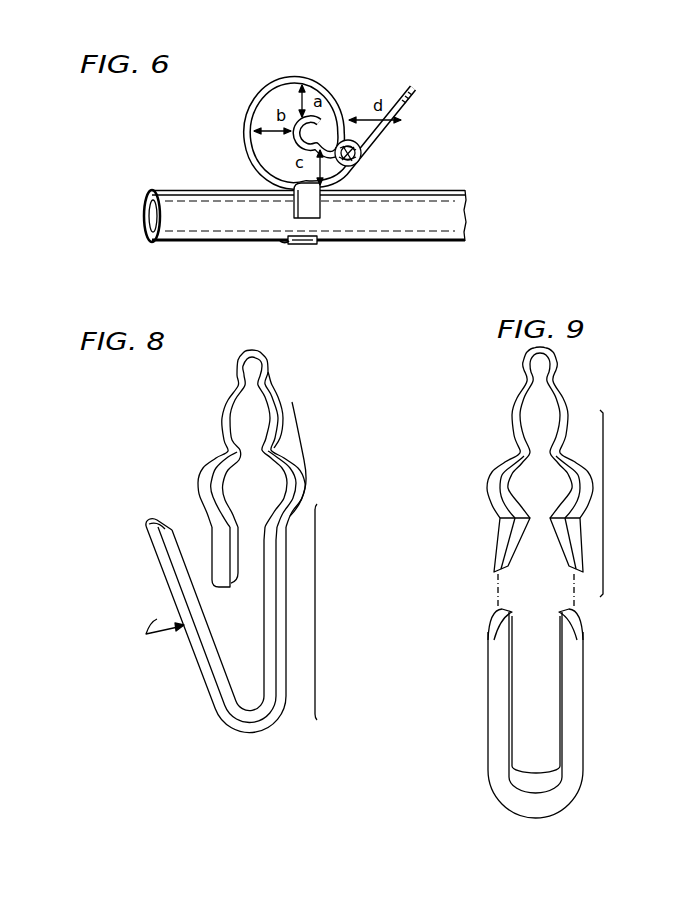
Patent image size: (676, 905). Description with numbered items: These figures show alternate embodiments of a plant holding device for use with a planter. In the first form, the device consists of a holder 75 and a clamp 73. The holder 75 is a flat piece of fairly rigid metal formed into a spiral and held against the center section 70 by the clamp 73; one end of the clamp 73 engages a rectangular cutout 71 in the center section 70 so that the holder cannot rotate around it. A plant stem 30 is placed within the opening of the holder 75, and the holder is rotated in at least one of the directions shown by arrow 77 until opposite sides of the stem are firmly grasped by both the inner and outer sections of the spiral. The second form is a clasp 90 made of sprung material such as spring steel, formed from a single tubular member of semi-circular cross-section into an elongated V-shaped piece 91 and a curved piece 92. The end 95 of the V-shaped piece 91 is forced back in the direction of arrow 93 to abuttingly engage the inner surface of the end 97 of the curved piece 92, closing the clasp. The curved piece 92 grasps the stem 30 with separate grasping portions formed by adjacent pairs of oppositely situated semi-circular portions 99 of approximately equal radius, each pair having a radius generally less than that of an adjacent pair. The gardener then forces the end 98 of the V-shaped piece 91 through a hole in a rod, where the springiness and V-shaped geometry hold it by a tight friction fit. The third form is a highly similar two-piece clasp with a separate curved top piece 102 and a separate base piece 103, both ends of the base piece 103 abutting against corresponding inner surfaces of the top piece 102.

In FIG. 6, the plant stem 30 is at (364, 160).
In FIG. 6, the center section 70 is at (467, 217).
In FIG. 6, the rectangular cutout 71 is at (285, 245).
In FIG. 6, the clamp 73 is at (322, 206).
In FIG. 6, the holder 75 is at (419, 112).
In FIG. 6, the arrow 77 is at (261, 73).
In FIG. 8, the clasp 90 is at (316, 612).
In FIG. 8, the elongated V-shaped piece 91 is at (207, 669).
In FIG. 8, the curved piece 92 is at (213, 466).
In FIG. 8, the arrow 93 is at (165, 617).
In FIG. 8, the end 95 is at (148, 519).
In FIG. 8, the end 97 is at (232, 588).
In FIG. 8, the end 98 is at (250, 734).
In FIG. 8, the semi-circular portions 99 is at (269, 377).
In FIG. 9, the curved top piece 102 is at (604, 488).
In FIG. 9, the base piece 103 is at (570, 787).